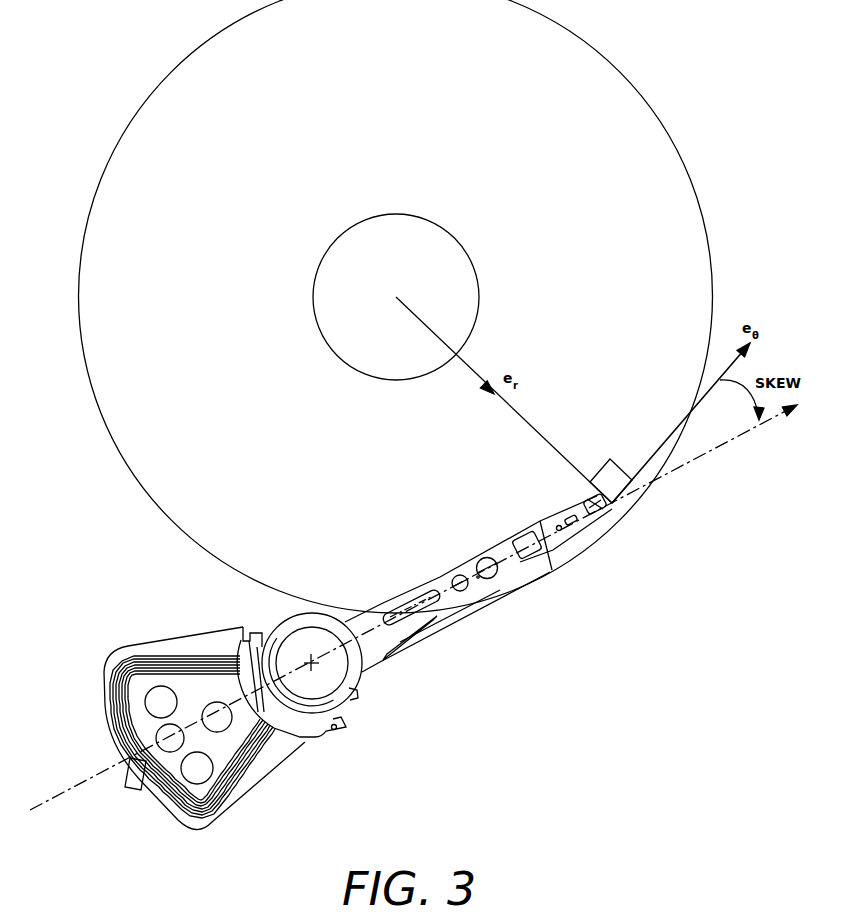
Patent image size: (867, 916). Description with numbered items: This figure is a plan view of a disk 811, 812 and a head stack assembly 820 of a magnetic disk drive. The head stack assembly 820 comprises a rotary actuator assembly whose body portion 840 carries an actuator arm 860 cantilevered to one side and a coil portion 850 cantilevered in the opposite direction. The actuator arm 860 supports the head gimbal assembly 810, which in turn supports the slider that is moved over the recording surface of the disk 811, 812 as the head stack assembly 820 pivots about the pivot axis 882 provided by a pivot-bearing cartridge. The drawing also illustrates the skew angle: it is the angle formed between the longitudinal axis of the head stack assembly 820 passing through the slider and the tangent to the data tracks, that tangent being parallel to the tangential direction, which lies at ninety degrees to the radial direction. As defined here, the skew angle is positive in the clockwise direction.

The head gimbal assembly 810 is at (621, 523).
The first disk 811 is at (678, 152).
The second disk 812 is at (507, 245).
The head stack assembly 820 is at (116, 571).
The body portion 840 is at (365, 691).
The coil portion 850 is at (163, 810).
The actuator arm 860 is at (437, 581).
The pivot axis 882 is at (311, 656).